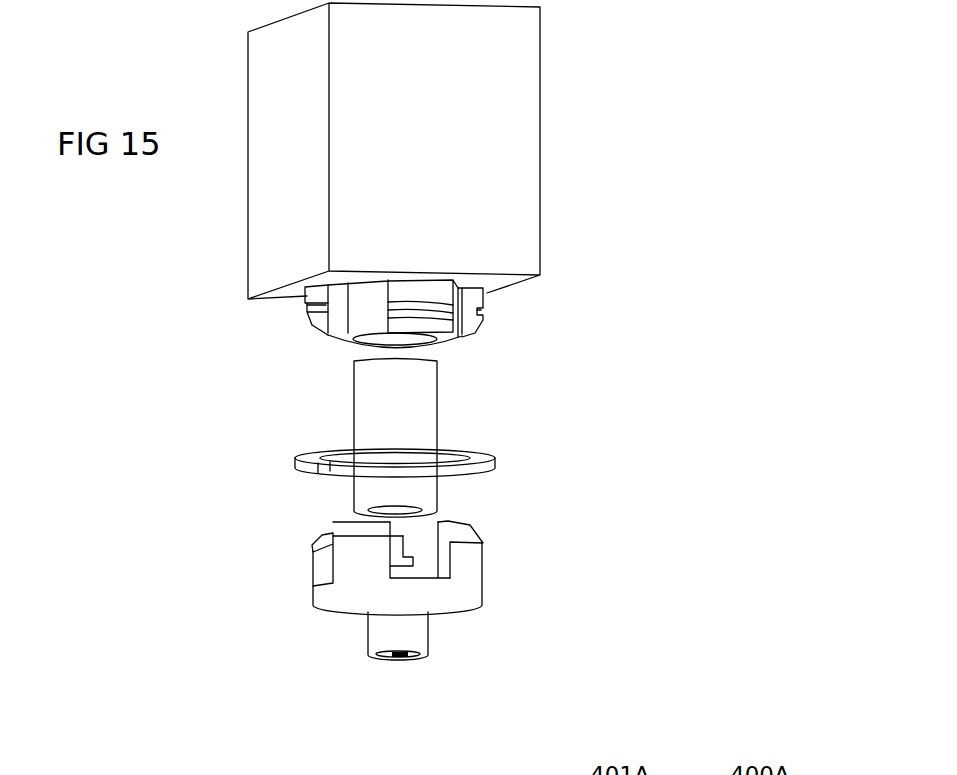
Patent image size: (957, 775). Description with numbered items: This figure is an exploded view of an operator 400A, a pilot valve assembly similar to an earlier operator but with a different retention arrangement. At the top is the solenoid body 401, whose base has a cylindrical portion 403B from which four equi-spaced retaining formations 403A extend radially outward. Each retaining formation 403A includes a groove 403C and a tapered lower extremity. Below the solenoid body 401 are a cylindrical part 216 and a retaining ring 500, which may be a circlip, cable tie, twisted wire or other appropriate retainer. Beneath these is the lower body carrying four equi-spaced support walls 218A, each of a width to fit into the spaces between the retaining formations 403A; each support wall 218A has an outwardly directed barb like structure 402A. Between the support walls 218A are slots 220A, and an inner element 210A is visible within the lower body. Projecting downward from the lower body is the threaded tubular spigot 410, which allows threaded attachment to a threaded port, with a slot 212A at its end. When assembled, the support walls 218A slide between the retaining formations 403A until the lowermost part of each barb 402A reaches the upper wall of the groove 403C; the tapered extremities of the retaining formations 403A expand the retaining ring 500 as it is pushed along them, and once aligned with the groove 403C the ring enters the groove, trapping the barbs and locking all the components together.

The solenoid body 401 is at (508, 83).
The retaining formation 403A is at (305, 298).
The cylindrical portion 403B is at (367, 312).
The groove 403C is at (303, 315).
The operator 400A is at (622, 262).
The cylindrical post 216 is at (403, 397).
The retaining ring 500 is at (495, 458).
The support wall 218A is at (358, 560).
The barb like structure 402A is at (312, 535).
The slot 220A is at (403, 537).
The inner key 210A is at (403, 560).
The threaded tubular spigot 410 is at (383, 635).
The slot in stud 212A is at (408, 665).